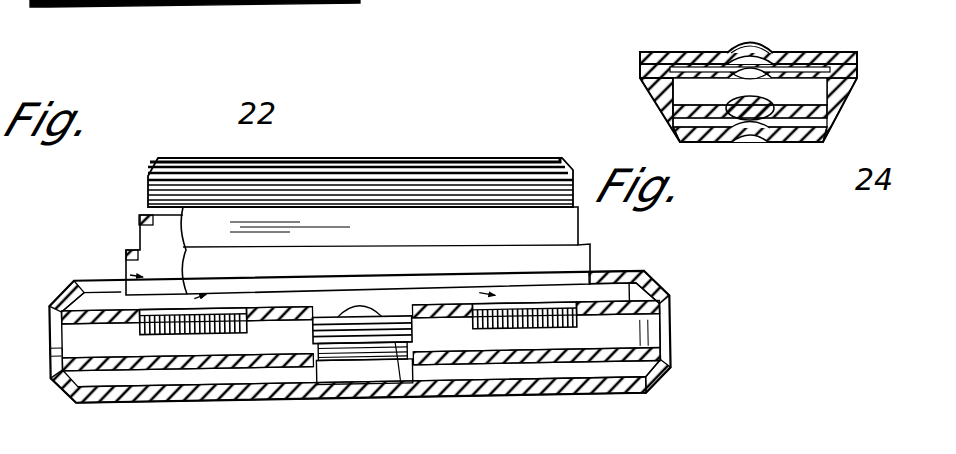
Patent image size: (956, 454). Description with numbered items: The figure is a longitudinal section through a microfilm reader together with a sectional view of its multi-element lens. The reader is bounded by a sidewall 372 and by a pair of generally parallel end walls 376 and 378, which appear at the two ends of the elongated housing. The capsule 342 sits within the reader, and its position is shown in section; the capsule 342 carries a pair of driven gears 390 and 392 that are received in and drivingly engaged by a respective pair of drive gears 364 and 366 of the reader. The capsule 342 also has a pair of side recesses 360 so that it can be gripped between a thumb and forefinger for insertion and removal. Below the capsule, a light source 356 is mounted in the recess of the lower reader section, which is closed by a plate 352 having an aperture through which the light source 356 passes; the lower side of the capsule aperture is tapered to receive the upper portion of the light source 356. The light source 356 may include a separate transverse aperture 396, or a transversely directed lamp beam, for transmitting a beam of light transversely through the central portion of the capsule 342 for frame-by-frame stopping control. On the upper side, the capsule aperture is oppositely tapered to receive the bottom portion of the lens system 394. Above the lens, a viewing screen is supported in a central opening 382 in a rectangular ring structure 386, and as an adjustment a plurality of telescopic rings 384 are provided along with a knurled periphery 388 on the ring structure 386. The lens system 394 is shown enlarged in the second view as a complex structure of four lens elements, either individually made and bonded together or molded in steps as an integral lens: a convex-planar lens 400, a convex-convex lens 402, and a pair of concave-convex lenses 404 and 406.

In FIG. 22, the sidewall 372 is at (349, 4).
In FIG. 22, the rectangular ring structure 386 is at (560, 153).
In FIG. 22, the knurled periphery 388 is at (574, 190).
In FIG. 22, the telescopic rings 384 is at (586, 255).
In FIG. 22, the central opening 382 is at (130, 276).
In FIG. 22, the end wall 378 is at (50, 329).
In FIG. 22, the plate 352 is at (62, 384).
In FIG. 22, the drive gear 364 is at (226, 309).
In FIG. 22, the drive gear 366 is at (486, 303).
In FIG. 22, the capsule 342 is at (488, 344).
In FIG. 22, the end wall 376 is at (672, 319).
In FIG. 22, the driven gear 390 is at (200, 326).
In FIG. 22, the driven gear 392 is at (495, 328).
In FIG. 22, the lens system 394 is at (402, 309).
In FIG. 24, the lens system 394 is at (648, 114).
In FIG. 22, the transverse aperture 396 is at (366, 363).
In FIG. 22, the light source 356 is at (329, 380).
In FIG. 22, the side recess 360 is at (405, 364).
In FIG. 24, the convex-planar lens 400 is at (790, 143).
In FIG. 24, the convex-convex lens 402 is at (748, 109).
In FIG. 24, the concave-convex lens 404 is at (722, 88).
In FIG. 24, the concave-convex lens 406 is at (768, 53).